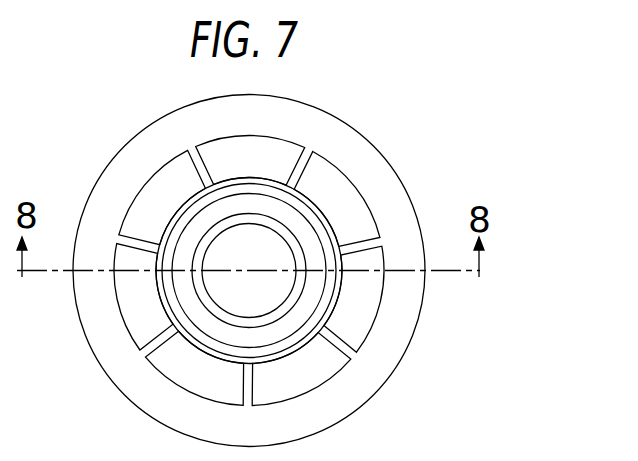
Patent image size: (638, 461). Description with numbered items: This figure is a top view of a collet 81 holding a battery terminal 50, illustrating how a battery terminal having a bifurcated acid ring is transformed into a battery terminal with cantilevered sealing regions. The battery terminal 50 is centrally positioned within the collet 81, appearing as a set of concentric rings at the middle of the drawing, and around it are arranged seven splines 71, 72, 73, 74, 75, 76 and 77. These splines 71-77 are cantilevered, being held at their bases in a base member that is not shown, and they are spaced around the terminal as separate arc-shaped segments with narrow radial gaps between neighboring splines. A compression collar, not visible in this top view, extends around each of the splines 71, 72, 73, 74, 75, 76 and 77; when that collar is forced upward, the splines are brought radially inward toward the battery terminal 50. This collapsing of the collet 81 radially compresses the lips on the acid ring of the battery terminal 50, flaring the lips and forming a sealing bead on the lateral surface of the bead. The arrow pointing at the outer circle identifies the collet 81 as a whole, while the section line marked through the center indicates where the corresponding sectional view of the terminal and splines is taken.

The collet 81 is at (125, 128).
The battery terminal 50 is at (318, 290).
The spline 71 is at (128, 298).
The spline 72 is at (157, 197).
The spline 73 is at (282, 152).
The spline 74 is at (352, 203).
The spline 75 is at (358, 318).
The spline 76 is at (305, 367).
The spline 77 is at (198, 362).